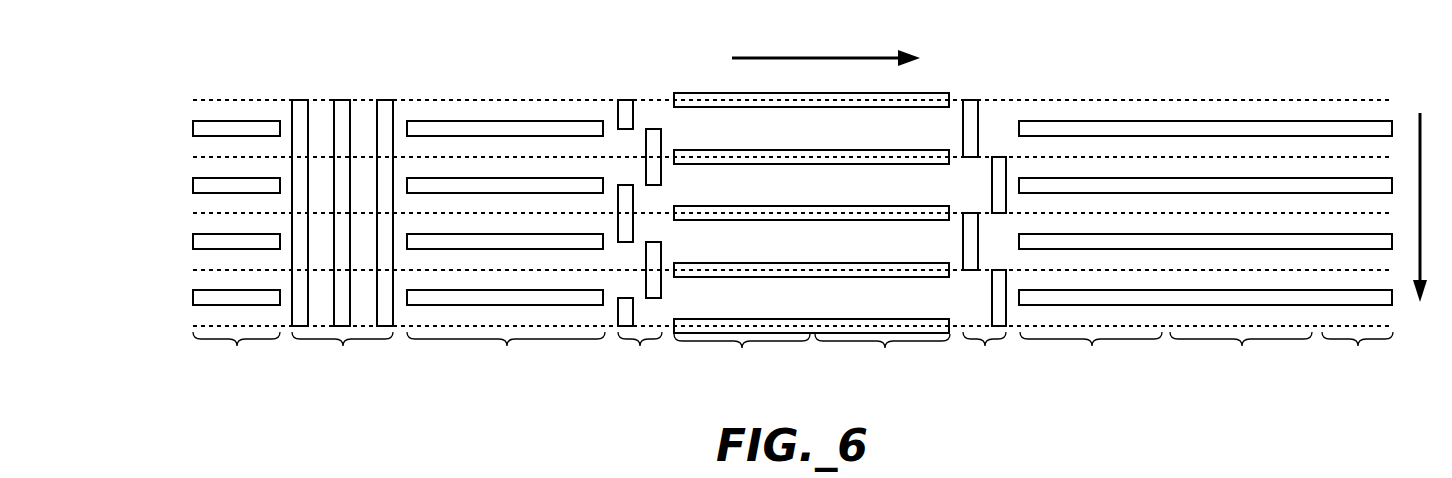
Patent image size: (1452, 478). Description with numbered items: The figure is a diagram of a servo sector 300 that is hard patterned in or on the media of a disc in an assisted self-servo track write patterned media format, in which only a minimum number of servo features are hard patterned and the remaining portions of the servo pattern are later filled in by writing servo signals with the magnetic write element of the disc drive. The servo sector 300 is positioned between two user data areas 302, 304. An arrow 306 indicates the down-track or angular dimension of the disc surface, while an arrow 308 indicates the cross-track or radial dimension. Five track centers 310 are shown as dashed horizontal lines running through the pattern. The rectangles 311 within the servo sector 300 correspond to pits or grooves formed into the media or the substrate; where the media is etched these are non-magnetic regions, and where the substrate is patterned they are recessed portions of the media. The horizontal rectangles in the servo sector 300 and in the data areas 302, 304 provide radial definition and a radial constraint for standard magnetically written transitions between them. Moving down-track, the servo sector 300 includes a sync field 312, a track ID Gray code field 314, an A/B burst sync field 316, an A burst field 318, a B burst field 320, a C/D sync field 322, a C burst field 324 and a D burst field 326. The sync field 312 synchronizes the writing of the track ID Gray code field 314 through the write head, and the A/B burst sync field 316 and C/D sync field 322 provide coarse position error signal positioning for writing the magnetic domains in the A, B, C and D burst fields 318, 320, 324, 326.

The servo sector 300 is at (1084, 78).
The data area 302 is at (237, 346).
The data area 304 is at (1358, 346).
The arrow 306 is at (810, 57).
The arrow 308 is at (1420, 135).
The track centers 310 is at (759, 213).
The rectangles 311 is at (618, 112).
The sync field 312 is at (343, 346).
The track ID Gray code field 314 is at (507, 346).
The A/B burst sync field 316 is at (640, 346).
The A burst field 318 is at (742, 348).
The B burst field 320 is at (885, 348).
The C/D sync field 322 is at (985, 346).
The C burst field 324 is at (1092, 346).
The D burst field 326 is at (1242, 346).